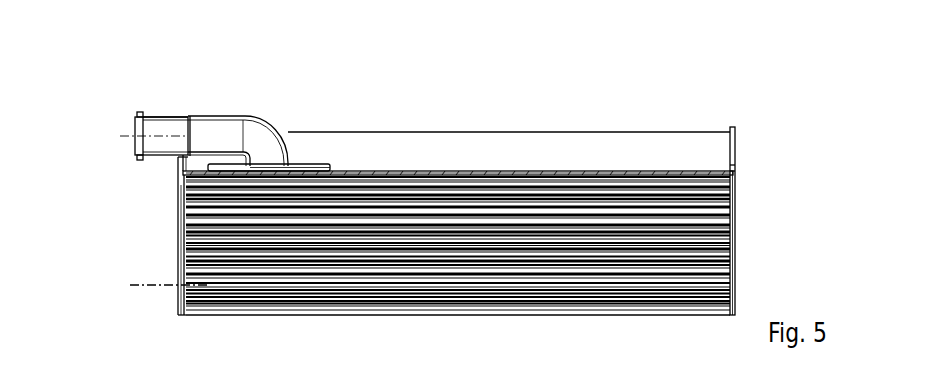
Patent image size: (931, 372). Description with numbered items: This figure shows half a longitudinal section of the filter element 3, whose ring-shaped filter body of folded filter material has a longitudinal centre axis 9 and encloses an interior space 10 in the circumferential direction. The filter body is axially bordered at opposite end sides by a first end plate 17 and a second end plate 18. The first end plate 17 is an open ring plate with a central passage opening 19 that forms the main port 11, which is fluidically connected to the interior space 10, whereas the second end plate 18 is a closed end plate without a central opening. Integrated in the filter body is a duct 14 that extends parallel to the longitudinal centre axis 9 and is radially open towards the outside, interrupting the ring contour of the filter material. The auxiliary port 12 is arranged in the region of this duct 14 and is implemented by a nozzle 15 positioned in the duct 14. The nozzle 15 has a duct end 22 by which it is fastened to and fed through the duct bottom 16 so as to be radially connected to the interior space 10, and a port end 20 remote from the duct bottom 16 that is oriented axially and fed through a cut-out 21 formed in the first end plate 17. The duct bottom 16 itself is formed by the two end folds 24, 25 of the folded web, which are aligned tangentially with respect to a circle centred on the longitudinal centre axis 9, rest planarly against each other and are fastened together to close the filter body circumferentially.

The filter element 3 is at (177, 87).
The longitudinal centre axis 9 is at (152, 288).
The interior space 10 is at (278, 262).
The main port 11 is at (180, 265).
The auxiliary port 12 is at (137, 126).
The duct 14 is at (486, 162).
The nozzle 15 is at (208, 108).
The duct bottom 16 is at (543, 170).
The first end plate 17 is at (170, 182).
The second end plate 18 is at (748, 182).
The central passage opening 19 is at (178, 208).
The port end 20 is at (163, 115).
The cut-out 21 is at (734, 148).
The duct end 22 is at (297, 166).
The end fold 24 is at (364, 171).
The end fold 25 is at (402, 171).